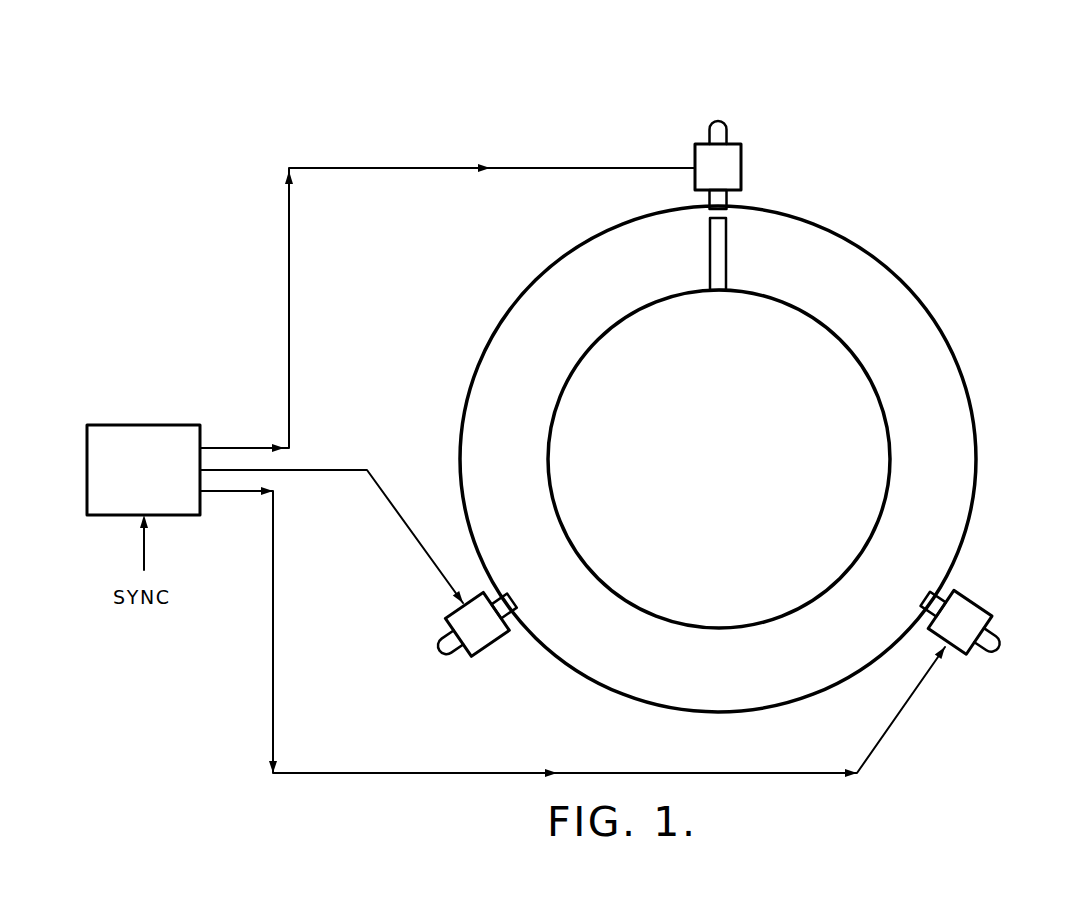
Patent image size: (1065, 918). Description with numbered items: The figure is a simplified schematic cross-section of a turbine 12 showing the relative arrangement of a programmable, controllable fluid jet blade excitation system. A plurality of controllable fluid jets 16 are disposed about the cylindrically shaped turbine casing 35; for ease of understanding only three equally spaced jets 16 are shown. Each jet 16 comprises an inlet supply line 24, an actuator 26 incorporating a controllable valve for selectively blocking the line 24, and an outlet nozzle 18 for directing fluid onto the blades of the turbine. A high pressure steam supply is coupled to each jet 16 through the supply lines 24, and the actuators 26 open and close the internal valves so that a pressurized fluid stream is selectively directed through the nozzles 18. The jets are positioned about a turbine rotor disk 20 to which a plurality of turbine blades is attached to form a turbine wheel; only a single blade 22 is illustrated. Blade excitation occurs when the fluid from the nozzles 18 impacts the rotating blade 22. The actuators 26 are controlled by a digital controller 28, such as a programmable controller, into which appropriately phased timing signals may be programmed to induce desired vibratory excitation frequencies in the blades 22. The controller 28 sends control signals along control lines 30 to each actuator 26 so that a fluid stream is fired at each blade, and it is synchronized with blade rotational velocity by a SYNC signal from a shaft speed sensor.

The turbine 12 is at (703, 459).
The controllable fluid jet 16 is at (742, 408).
The outlet nozzle 18 is at (727, 202).
The turbine rotor disk 20 is at (889, 430).
The turbine blade 22 is at (726, 262).
The inlet supply line 24 is at (726, 135).
The actuator 26 is at (706, 180).
The digital controller 28 is at (158, 425).
The control lines 30 is at (288, 272).
The turbine casing 35 is at (975, 412).